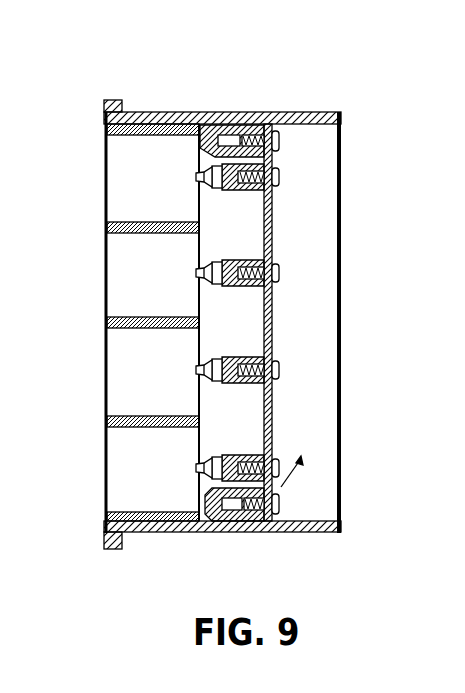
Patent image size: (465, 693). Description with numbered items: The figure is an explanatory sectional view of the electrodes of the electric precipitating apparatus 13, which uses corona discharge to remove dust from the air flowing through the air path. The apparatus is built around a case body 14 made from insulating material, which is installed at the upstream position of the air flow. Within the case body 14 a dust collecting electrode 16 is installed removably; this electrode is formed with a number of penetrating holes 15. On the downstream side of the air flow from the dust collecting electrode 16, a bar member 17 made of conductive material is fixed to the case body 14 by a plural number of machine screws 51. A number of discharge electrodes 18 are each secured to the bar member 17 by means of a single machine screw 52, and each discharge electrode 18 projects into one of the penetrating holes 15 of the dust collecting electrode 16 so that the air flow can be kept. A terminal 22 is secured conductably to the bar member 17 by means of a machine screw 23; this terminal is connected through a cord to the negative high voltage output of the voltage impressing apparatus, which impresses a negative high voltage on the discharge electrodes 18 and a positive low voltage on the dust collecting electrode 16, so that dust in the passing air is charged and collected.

The electric precipitating apparatus 13 is at (256, 305).
The case body 14 is at (163, 112).
The penetrating holes 15 is at (125, 131).
The dust collecting electrode 16 is at (105, 517).
The bar member 17 is at (273, 307).
The discharge electrode 18 is at (196, 177).
The terminal 22 is at (290, 526).
The machine screw 23 is at (290, 508).
The machine screw 51 is at (298, 112).
The machine screw 52 is at (279, 173).